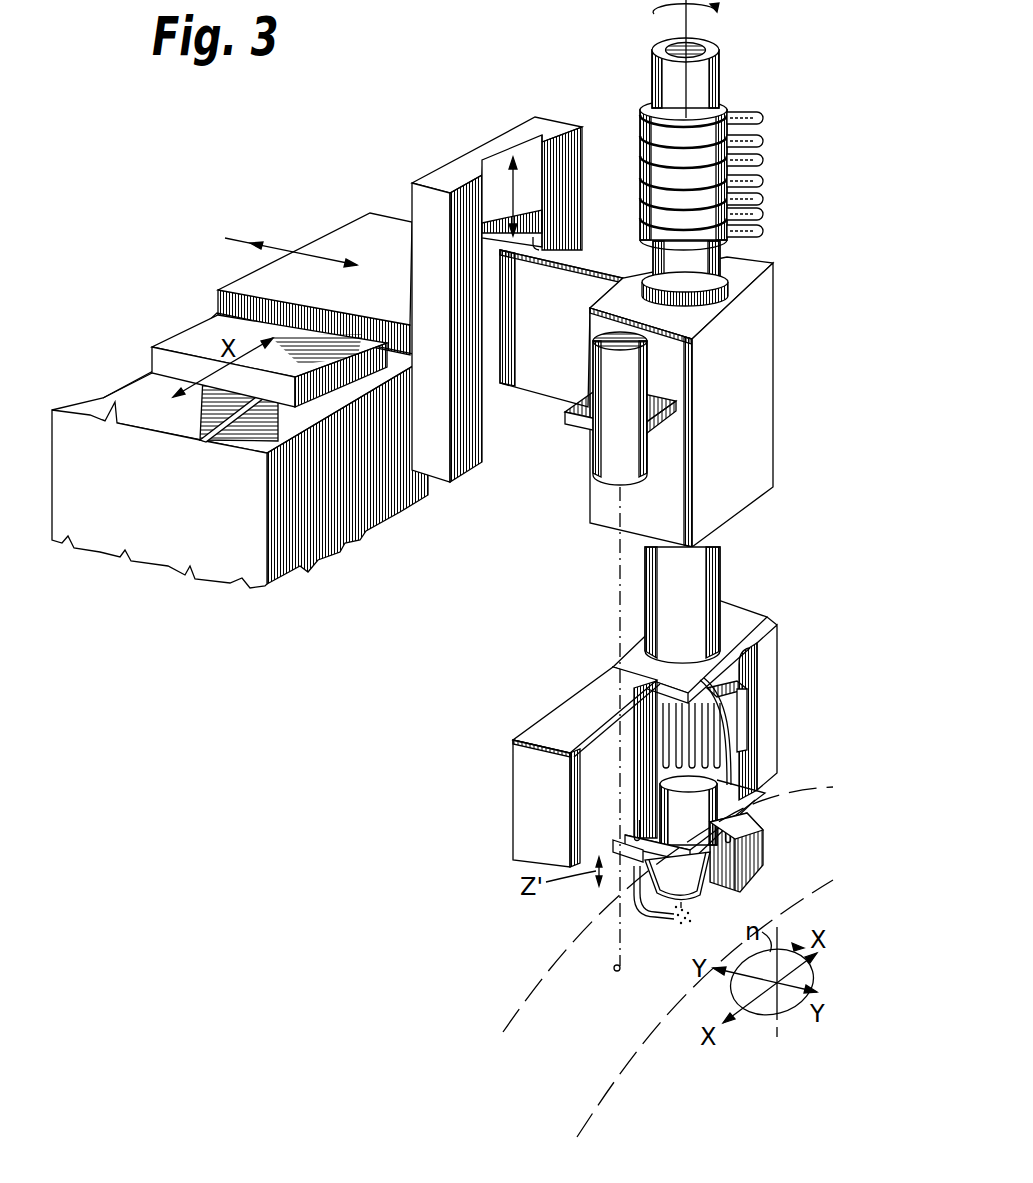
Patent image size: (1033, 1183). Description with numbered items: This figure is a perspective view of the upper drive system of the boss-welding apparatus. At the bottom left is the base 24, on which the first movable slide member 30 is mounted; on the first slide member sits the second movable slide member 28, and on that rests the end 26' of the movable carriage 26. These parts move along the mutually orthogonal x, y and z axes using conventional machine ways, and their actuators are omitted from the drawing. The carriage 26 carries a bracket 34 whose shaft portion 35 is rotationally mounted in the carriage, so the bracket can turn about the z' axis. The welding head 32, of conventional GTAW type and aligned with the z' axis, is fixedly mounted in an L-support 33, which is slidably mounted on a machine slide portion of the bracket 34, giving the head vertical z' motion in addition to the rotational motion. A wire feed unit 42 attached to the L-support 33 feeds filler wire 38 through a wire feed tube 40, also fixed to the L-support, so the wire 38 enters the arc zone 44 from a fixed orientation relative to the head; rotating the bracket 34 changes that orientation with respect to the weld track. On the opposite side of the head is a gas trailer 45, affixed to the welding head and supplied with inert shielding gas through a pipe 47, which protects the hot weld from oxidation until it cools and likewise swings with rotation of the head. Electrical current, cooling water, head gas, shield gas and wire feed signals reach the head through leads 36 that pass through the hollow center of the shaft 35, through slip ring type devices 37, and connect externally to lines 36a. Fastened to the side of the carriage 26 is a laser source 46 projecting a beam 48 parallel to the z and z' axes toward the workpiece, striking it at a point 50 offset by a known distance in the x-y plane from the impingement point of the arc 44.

The base 24 is at (169, 521).
The movable carriage 26 is at (712, 402).
The end of movable carriage 26' is at (522, 299).
The second movable slide member 28 is at (345, 238).
The first movable slide member 30 is at (175, 343).
The welding head 32 is at (673, 808).
The L-support 33 is at (727, 815).
The bracket 34 is at (733, 623).
The shaft portion 35 is at (728, 258).
The leads 36 is at (697, 746).
The lines 36a is at (749, 100).
The slip ring type devices 37 is at (628, 98).
The filler wire 38 is at (678, 921).
The wire feed tube 40 is at (648, 877).
The wire feed unit 42 is at (526, 784).
The arc zone 44 is at (688, 903).
The gas trailer 45 is at (767, 834).
The laser source 46 is at (608, 365).
The pipe 47 is at (726, 757).
The beam 48 is at (617, 562).
The point 50 is at (616, 970).